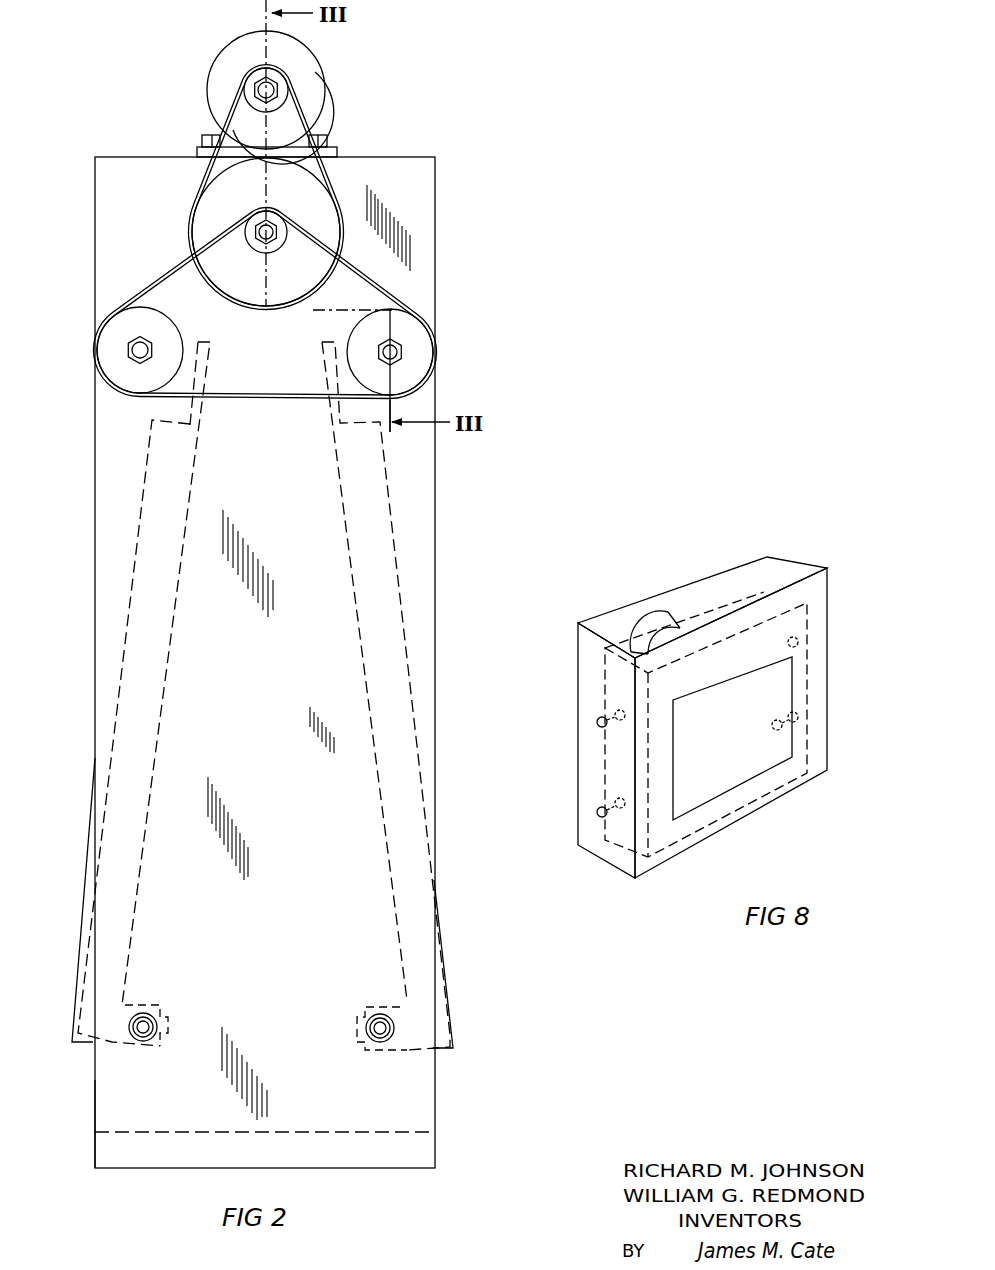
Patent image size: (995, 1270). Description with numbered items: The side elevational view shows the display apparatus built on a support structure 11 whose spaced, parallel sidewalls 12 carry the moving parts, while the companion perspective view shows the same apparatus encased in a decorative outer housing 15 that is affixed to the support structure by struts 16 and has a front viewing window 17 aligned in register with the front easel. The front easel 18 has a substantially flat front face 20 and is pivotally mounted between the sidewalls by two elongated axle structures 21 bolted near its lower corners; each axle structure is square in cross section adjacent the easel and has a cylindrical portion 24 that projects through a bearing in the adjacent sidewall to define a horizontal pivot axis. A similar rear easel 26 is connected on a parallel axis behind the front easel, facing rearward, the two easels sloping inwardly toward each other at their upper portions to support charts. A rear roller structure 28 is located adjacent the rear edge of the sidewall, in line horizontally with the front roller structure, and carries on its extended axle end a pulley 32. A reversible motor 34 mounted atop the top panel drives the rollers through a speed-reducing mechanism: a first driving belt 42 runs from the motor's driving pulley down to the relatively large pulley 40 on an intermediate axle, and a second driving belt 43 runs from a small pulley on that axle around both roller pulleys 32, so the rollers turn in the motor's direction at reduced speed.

In FIG. 2, the support structure 11 is at (438, 492).
In FIG. 8, the support structure 11 is at (603, 695).
In FIG. 2, the sidewalls 12 is at (95, 1076).
In FIG. 8, the outer housing 15 is at (576, 809).
In FIG. 8, the struts 16 is at (598, 722).
In FIG. 8, the front viewing window 17 is at (705, 797).
In FIG. 2, the front easel 18 is at (444, 946).
In FIG. 2, the front face 20 is at (387, 795).
In FIG. 2, the axle structures 21 is at (430, 326).
In FIG. 2, the cylindrical portion 24 is at (380, 1042).
In FIG. 2, the rear easel 26 is at (92, 936).
In FIG. 2, the rear roller structure 28 is at (184, 327).
In FIG. 2, the pulley 32 is at (355, 334).
In FIG. 2, the reversible motor 34 is at (320, 71).
In FIG. 8, the reversible motor 34 is at (650, 614).
In FIG. 2, the large pulley 40 is at (308, 203).
In FIG. 2, the first driving belt 42 is at (200, 171).
In FIG. 2, the second driving belt 43 is at (186, 273).